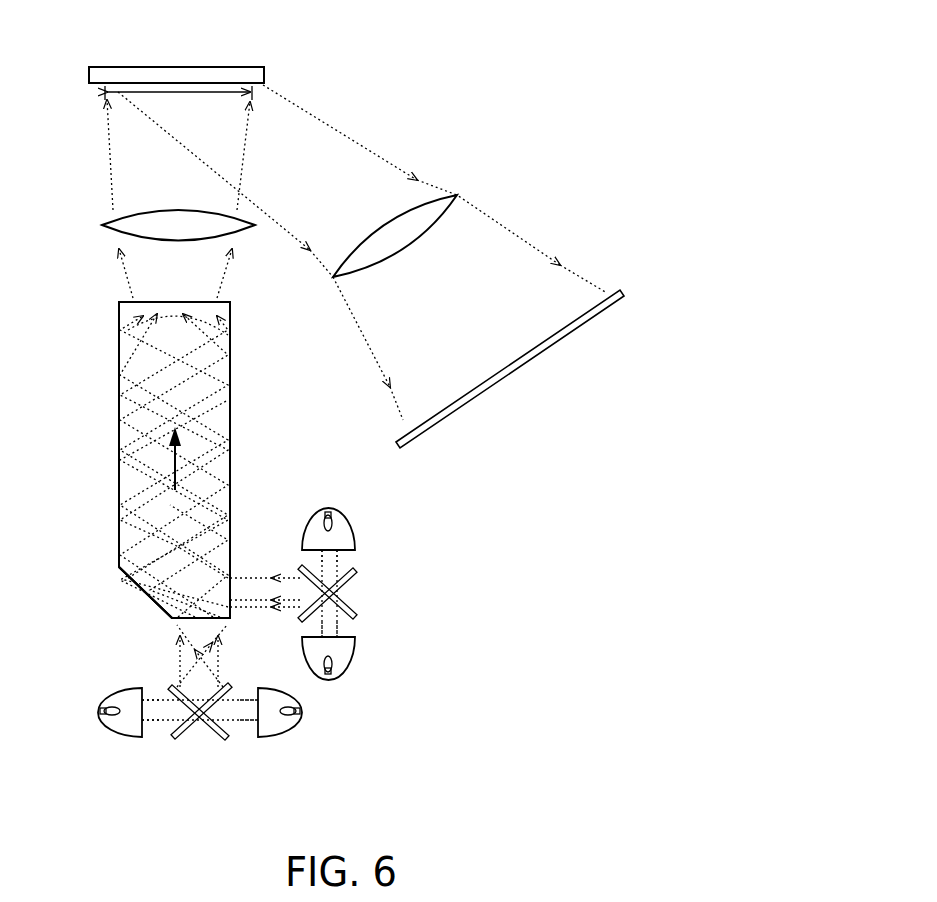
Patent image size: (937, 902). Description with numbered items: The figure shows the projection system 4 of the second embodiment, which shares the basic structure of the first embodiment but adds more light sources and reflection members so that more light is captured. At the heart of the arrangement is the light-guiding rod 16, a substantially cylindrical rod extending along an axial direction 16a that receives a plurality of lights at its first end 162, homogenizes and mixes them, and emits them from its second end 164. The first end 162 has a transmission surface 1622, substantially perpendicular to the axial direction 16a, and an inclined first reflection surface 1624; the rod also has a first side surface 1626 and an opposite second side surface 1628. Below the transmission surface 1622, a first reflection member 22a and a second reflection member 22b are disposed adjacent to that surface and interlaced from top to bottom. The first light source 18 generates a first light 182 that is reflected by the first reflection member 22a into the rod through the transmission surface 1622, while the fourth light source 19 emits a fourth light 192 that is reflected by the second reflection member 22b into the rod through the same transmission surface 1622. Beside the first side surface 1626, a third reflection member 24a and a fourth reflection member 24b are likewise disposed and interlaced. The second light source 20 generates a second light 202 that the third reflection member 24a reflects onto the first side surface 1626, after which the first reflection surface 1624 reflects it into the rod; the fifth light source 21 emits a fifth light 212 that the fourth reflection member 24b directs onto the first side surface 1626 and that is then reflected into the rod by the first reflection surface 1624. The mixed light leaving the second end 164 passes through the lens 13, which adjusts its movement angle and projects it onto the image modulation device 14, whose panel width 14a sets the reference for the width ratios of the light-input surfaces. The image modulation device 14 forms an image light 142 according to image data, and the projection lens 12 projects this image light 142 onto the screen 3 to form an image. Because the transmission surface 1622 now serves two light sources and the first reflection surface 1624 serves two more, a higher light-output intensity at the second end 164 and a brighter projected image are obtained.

The projection system 4 is at (524, 64).
The image modulation device 14 is at (180, 70).
The panel width 14a is at (178, 103).
The image light 142 is at (330, 121).
The projection lens 12 is at (457, 195).
The lens 13 is at (253, 233).
The light-guiding rod 16 is at (223, 405).
The second end 164 is at (177, 327).
The axial direction 16a is at (167, 462).
The first end 162 is at (183, 552).
The first side surface 1626 is at (232, 561).
The second side surface 1628 is at (116, 539).
The first reflection surface 1624 is at (136, 590).
The transmission surface 1622 is at (209, 623).
The screen 3 is at (513, 367).
The fifth light source 21 is at (345, 523).
The fifth light 212 is at (347, 560).
The fourth reflection member 24b is at (353, 577).
The third reflection member 24a is at (352, 608).
The second light 202 is at (349, 629).
The second light source 20 is at (343, 663).
The fourth light source 19 is at (127, 730).
The fourth light 192 is at (157, 726).
The second reflection member 22b is at (185, 740).
The first reflection member 22a is at (215, 740).
The first light 182 is at (243, 727).
The first light source 18 is at (271, 730).